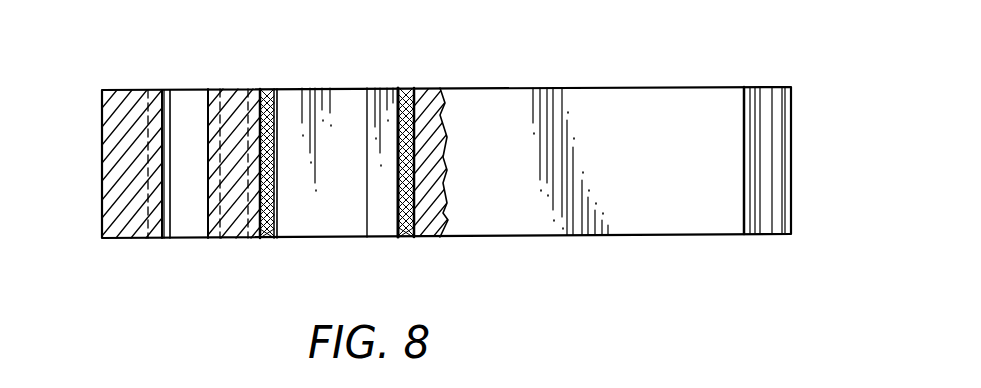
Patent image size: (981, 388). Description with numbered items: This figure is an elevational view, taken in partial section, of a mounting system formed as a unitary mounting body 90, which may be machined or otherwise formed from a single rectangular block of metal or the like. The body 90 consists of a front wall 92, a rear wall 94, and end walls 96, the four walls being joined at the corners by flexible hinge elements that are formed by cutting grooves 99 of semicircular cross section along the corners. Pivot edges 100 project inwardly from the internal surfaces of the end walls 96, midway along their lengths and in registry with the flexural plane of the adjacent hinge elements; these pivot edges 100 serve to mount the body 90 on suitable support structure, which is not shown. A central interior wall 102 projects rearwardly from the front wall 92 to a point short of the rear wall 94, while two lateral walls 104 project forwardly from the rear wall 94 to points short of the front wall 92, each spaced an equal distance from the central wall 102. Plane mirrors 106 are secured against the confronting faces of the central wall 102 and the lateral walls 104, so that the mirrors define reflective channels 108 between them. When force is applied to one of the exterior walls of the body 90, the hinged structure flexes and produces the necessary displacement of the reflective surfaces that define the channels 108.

The unitary mounting body 90 is at (799, 86).
The front wall 92 is at (610, 113).
The rear wall 94 is at (333, 100).
The end wall 96 is at (112, 135).
The groove 99 is at (748, 190).
The pivot edge 100 is at (166, 183).
The central interior wall 102 is at (433, 100).
The lateral wall 104 is at (248, 118).
The plane mirror 106 is at (278, 202).
The reflective channel 108 is at (338, 127).